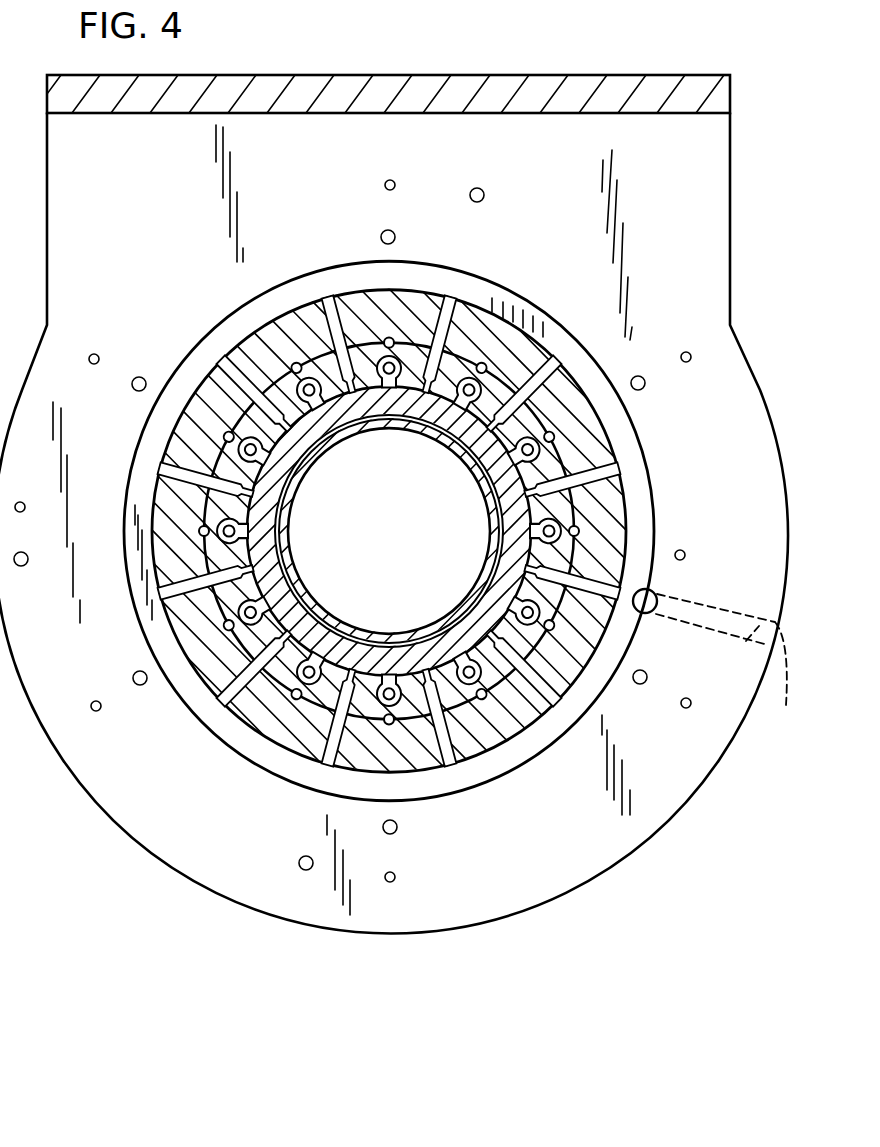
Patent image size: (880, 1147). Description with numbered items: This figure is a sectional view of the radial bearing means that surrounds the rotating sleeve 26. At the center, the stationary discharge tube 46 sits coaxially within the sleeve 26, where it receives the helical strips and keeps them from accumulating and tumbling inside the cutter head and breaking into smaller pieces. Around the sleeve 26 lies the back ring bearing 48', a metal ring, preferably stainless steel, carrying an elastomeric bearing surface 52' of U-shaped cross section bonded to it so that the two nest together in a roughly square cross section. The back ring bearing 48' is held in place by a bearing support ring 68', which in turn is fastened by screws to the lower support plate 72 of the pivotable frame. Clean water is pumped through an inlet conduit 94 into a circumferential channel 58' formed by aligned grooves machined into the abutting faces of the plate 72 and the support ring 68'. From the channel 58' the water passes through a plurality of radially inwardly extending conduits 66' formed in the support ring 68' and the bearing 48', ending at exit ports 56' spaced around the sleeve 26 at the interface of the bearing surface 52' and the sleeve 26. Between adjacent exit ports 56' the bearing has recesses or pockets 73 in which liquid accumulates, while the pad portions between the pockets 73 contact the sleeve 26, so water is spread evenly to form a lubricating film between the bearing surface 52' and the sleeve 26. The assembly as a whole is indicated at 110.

The sleeve 26 is at (515, 500).
The stationary discharge tube 46 is at (337, 440).
The back ring bearing 48' is at (457, 531).
The bearing surface 52' is at (454, 531).
The exit ports 56' is at (389, 530).
The circumferential channel 58' is at (389, 502).
The radially inwardly extending conduits 66' is at (462, 531).
The bearing support ring 68' is at (427, 530).
The lower support plate 72 is at (668, 773).
The recesses or pockets 73 is at (460, 668).
The inlet conduit 94 is at (717, 665).
The one-way clutch assembly 110 is at (512, 795).